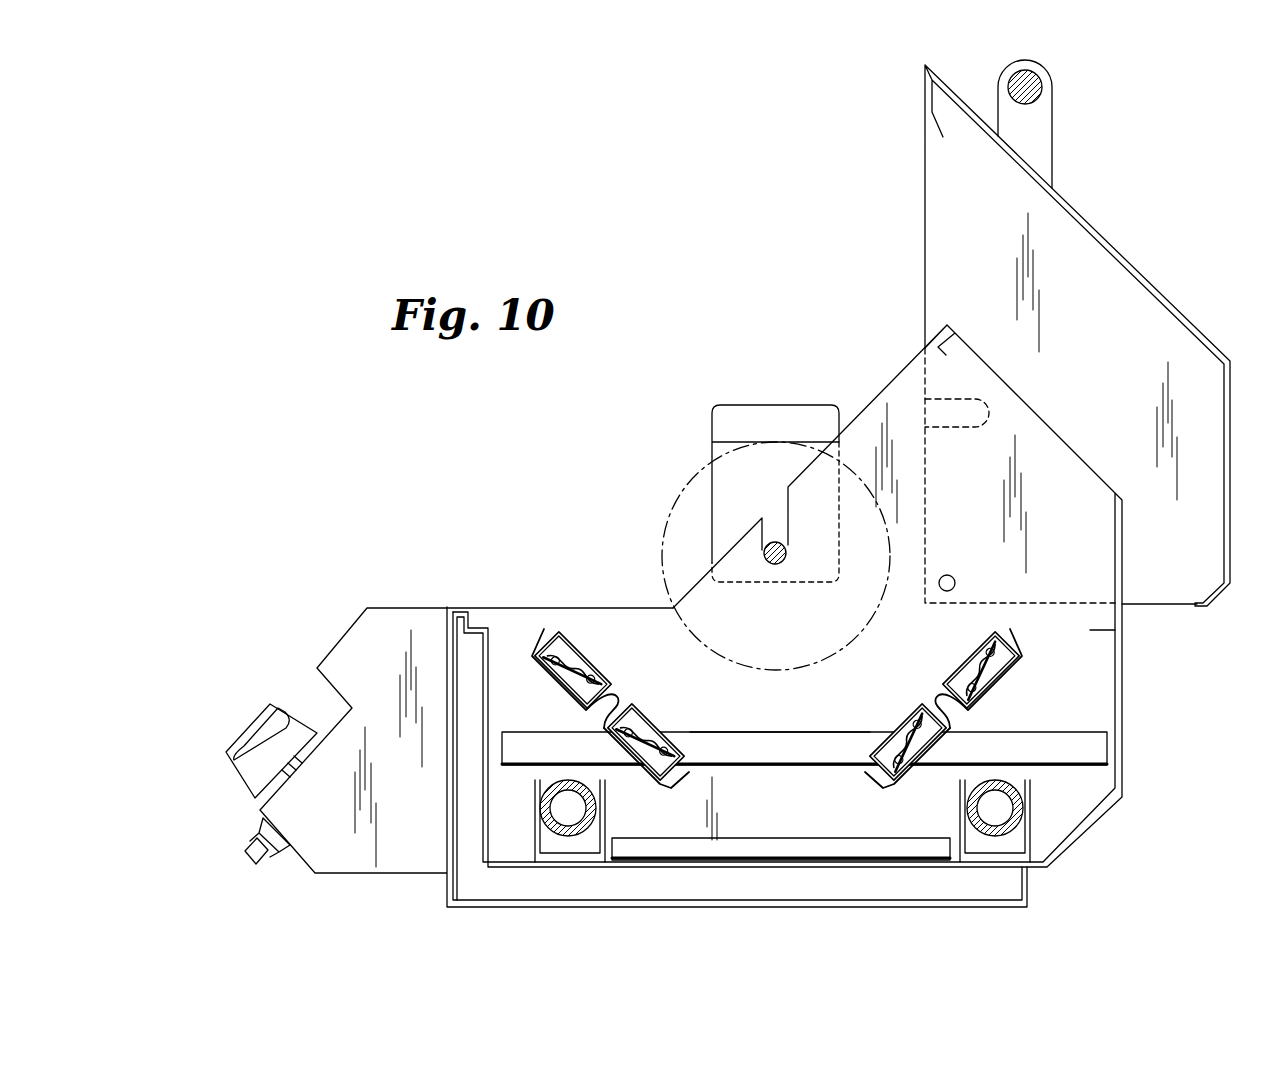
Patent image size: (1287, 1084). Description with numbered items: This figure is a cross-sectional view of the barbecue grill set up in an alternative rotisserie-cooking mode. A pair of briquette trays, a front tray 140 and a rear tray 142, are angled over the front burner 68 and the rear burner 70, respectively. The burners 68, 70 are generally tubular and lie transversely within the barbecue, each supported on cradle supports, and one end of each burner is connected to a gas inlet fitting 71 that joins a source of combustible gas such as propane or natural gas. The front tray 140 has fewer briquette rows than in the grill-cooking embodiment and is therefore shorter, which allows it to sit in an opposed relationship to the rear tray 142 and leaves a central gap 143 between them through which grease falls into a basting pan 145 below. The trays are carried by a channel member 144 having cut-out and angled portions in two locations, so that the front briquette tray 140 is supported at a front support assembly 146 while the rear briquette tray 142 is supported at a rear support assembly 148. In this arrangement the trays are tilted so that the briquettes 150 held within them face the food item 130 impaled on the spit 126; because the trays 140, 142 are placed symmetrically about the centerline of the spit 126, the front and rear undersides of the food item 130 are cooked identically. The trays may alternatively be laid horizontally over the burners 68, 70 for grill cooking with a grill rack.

The front burner 68 is at (545, 800).
The rear burner 70 is at (1022, 800).
The gas inlet fitting 71 is at (262, 862).
The spit 126 is at (764, 562).
The food item 130 is at (665, 522).
The front tray 140 is at (530, 635).
The rear tray 142 is at (1026, 640).
The central gap 143 is at (797, 717).
The channel member 144 is at (1097, 755).
The basting pan 145 is at (839, 848).
The front support assembly 146 is at (673, 793).
The rear support assembly 148 is at (908, 793).
The briquettes 150 is at (598, 664).